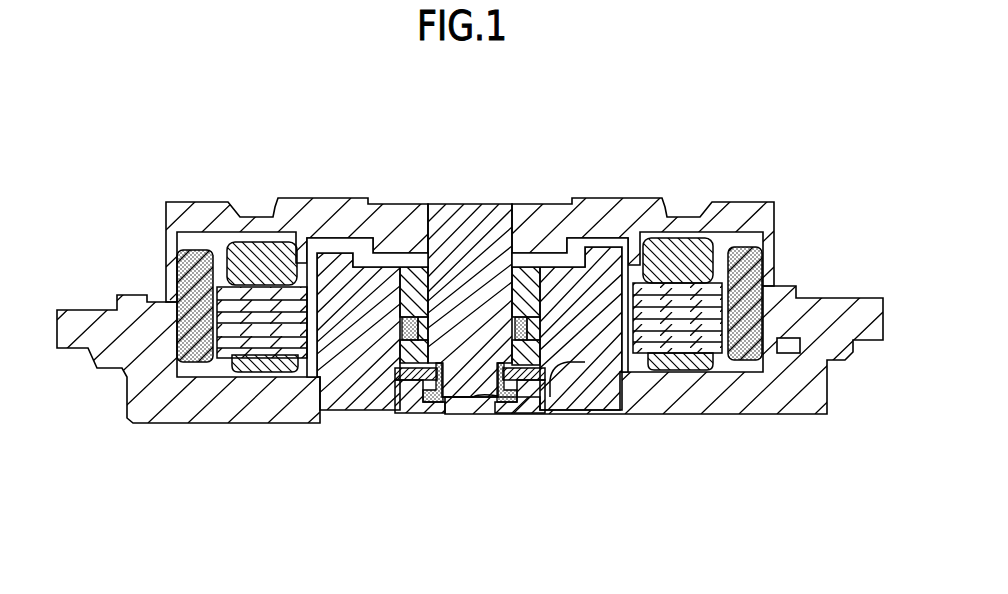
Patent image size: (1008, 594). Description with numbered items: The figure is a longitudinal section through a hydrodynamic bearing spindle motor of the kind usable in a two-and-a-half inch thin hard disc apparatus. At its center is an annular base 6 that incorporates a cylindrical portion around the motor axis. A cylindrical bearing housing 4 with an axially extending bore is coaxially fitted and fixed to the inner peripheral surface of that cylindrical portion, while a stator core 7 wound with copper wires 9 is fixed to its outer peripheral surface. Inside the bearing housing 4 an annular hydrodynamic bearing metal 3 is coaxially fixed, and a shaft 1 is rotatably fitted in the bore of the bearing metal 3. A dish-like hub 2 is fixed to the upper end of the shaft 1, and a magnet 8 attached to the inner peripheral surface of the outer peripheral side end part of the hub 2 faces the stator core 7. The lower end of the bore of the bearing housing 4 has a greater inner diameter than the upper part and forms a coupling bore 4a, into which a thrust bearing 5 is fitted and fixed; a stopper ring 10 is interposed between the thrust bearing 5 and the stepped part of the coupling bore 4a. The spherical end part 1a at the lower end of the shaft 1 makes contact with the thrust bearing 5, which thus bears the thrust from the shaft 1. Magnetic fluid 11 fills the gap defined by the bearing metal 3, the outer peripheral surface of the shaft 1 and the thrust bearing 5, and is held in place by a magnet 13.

The shaft 1 is at (458, 212).
The spherical end part 1a is at (473, 413).
The hub 2 is at (190, 215).
The hydrodynamic bearing metal 3 is at (418, 410).
The bearing housing 4 is at (600, 378).
The coupling bore 4a is at (552, 363).
The thrust bearing 5 is at (412, 415).
The annular base 6 is at (222, 425).
The stator core 7 is at (675, 248).
The magnet 8 is at (753, 260).
The copper wires 9 is at (218, 305).
The stopper ring 10 is at (540, 380).
The magnetic fluid 11 is at (520, 413).
The magnet 13 is at (518, 265).